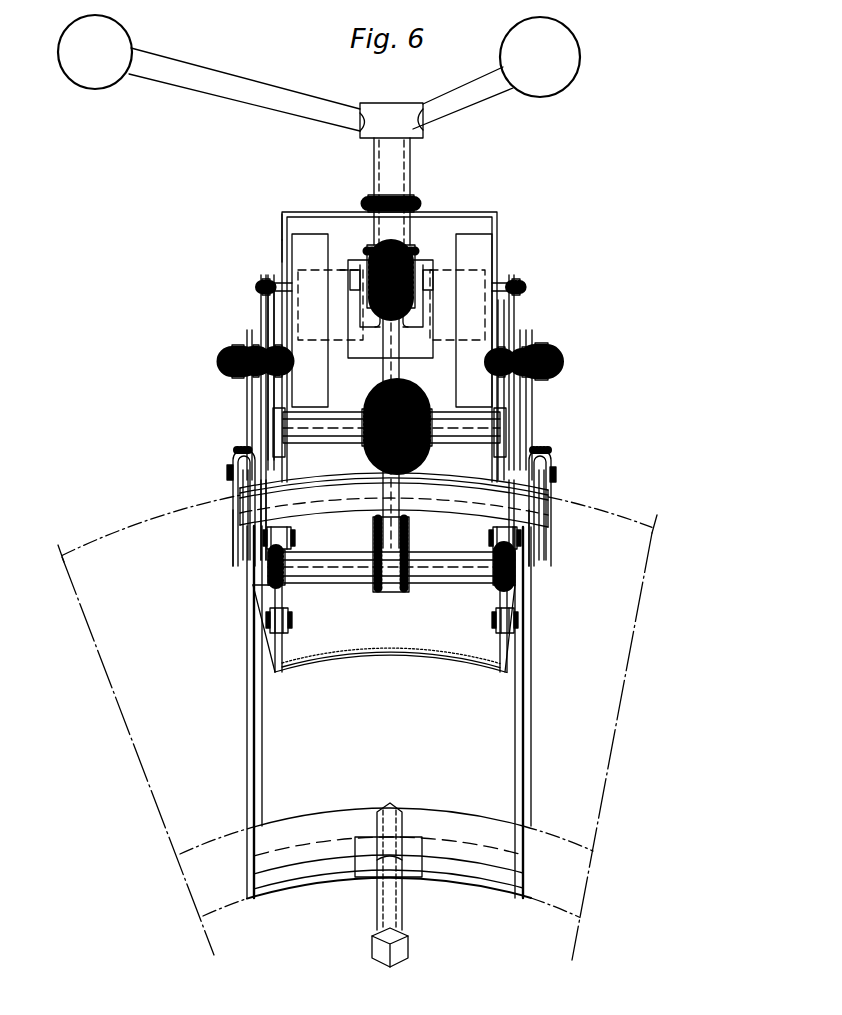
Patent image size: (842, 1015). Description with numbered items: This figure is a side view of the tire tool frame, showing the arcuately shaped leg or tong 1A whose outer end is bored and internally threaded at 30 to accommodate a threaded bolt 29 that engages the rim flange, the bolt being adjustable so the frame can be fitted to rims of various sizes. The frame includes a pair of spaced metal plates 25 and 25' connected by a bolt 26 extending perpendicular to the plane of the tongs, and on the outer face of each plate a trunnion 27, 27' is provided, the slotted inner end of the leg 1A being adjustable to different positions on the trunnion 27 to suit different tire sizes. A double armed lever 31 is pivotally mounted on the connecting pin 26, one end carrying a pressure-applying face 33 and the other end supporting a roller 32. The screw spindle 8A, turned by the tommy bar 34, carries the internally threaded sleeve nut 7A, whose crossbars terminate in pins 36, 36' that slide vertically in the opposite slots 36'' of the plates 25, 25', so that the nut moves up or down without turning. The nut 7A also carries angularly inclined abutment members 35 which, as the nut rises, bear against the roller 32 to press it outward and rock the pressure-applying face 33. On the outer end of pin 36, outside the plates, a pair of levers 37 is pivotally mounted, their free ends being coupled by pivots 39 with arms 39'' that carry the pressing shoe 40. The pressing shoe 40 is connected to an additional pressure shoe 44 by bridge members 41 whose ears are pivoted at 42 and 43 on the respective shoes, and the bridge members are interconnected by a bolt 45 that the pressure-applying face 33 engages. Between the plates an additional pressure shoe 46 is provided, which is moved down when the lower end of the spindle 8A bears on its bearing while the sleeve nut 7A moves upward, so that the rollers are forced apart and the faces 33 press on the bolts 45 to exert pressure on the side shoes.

The tommy bar 34 is at (259, 92).
The screw spindle 8A is at (395, 176).
The metal plate 25 is at (417, 345).
The metal plate 25' is at (253, 224).
The slot 36'' is at (258, 248).
The pin 36' is at (255, 285).
The pin 36 is at (533, 287).
The roller 32 is at (415, 250).
The abutment member 35 is at (433, 316).
The sleeve nut 7A is at (346, 323).
The double armed lever 31 is at (383, 402).
The trunnion 27' is at (227, 360).
The trunnion 27 is at (567, 359).
The lever 37 is at (262, 388).
The bolt 26 is at (500, 427).
The pivot 39 is at (402, 506).
The arm 39'' is at (413, 521).
The ear pivot 42 is at (535, 547).
The pressure shoe 46 is at (305, 497).
The bolt 45 is at (345, 570).
The pressure-applying face 33 is at (405, 548).
The pressing shoe 40 is at (480, 552).
The bridge member 41 is at (257, 587).
The ear pivot 43 is at (270, 621).
The pressure shoe 44 is at (315, 640).
The arcuately shaped leg 1A is at (248, 708).
The threaded bore 30 is at (376, 862).
The threaded bolt 29 is at (392, 903).